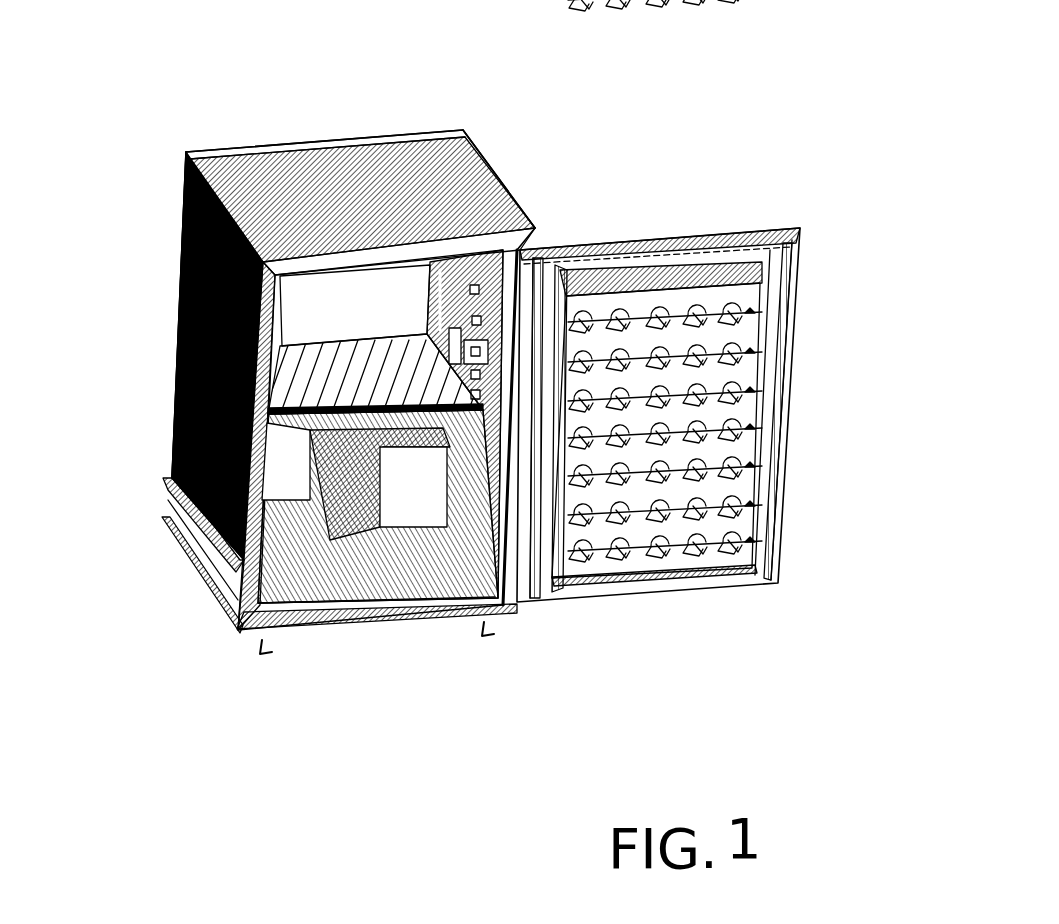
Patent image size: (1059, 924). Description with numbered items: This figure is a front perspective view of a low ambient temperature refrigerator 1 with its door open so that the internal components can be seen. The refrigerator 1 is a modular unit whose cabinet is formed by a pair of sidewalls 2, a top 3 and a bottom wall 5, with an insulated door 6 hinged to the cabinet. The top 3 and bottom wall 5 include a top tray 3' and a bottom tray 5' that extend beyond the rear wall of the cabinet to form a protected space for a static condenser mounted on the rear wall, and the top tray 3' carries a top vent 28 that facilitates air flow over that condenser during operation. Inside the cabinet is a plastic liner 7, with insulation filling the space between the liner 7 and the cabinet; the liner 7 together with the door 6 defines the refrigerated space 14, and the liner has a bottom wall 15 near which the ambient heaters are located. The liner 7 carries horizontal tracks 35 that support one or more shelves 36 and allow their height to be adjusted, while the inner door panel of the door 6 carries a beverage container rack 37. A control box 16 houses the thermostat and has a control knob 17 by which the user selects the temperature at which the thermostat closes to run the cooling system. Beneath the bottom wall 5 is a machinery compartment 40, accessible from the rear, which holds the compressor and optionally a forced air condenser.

The refrigerator 1 is at (212, 633).
The sidewalls 2 is at (178, 332).
The top 3 is at (409, 172).
The top tray 3' is at (135, 162).
The bottom wall 5 is at (377, 655).
The bottom tray 5' is at (167, 560).
The door 6 is at (797, 284).
The plastic liner 7 is at (267, 486).
The refrigerated space 14 is at (342, 311).
The bottom wall 15 is at (283, 578).
The control box 16 is at (482, 345).
The control knob 17 is at (452, 330).
The top vent 28 is at (373, 143).
The horizontal tracks 35 is at (472, 432).
The shelves 36 is at (297, 420).
The beverage container rack 37 is at (752, 396).
The machinery compartment 40 is at (363, 480).